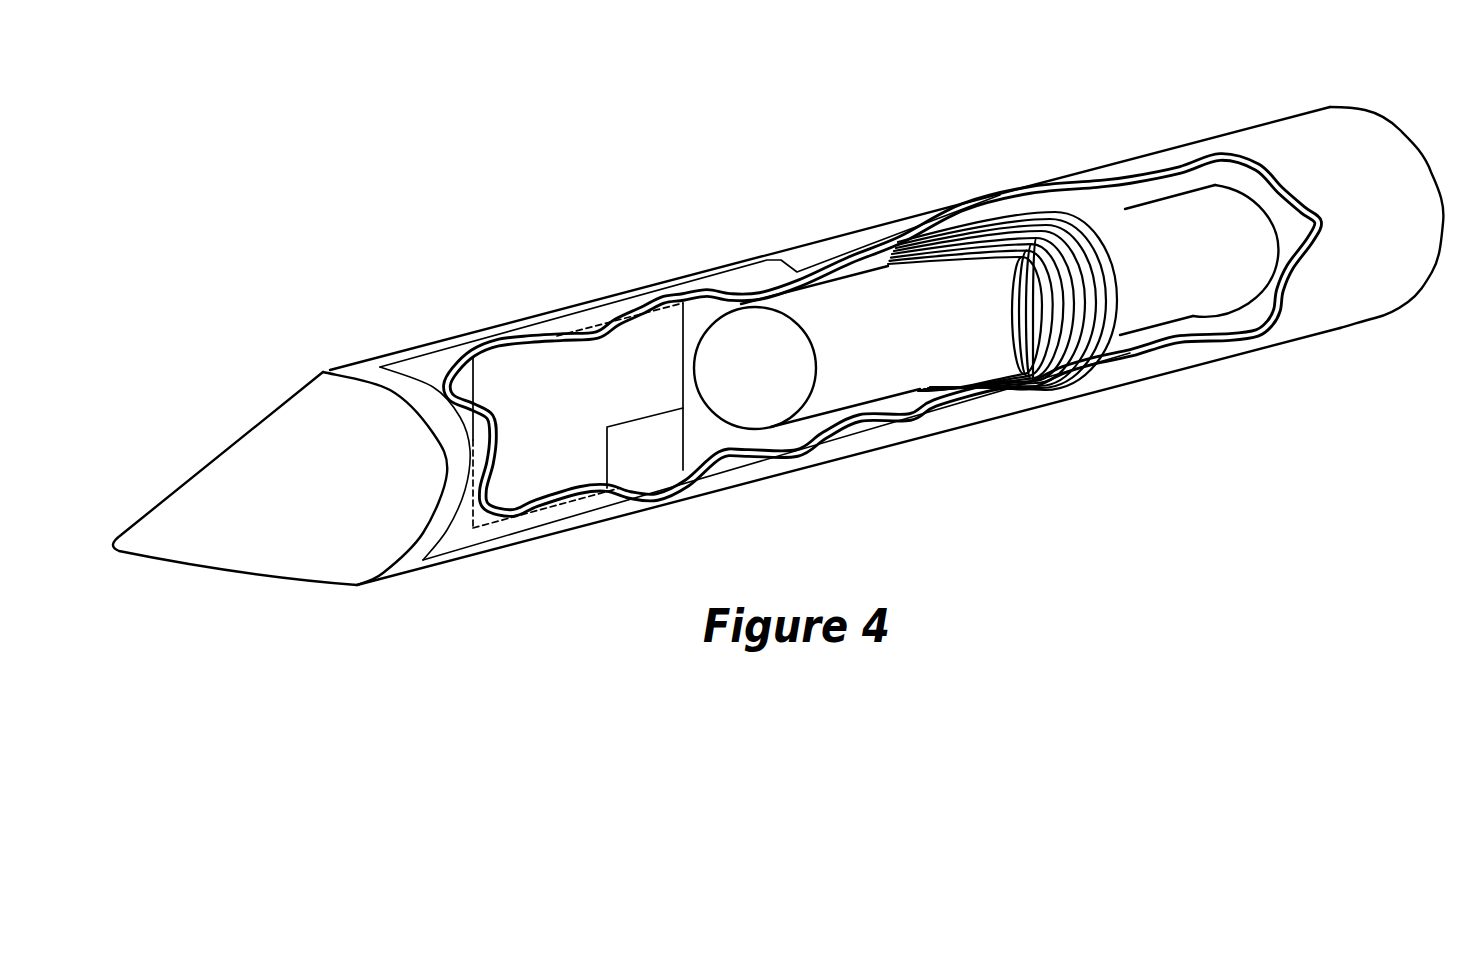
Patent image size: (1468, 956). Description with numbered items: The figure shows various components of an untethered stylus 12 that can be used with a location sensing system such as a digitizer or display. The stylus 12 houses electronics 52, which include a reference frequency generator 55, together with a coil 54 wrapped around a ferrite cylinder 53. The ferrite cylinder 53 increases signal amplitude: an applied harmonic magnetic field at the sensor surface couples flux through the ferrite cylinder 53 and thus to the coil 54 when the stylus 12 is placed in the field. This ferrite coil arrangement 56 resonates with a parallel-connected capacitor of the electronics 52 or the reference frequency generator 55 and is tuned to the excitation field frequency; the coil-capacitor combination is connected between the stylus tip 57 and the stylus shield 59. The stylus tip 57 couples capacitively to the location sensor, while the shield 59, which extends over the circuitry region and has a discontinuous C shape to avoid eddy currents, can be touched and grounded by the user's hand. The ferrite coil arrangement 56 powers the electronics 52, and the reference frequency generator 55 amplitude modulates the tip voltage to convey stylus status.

The untethered stylus 12 is at (334, 335).
The electronics 52 is at (577, 370).
The ferrite cylinder 53 is at (843, 298).
The coil 54 is at (1026, 240).
The reference frequency generator 55 is at (670, 465).
The ferrite coil arrangement 56 is at (1082, 215).
The stylus tip 57 is at (200, 478).
The stylus shield 59 is at (443, 360).